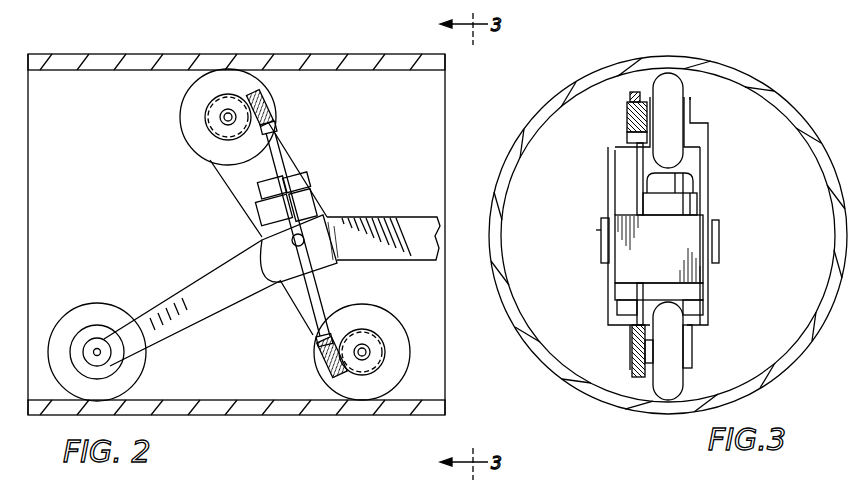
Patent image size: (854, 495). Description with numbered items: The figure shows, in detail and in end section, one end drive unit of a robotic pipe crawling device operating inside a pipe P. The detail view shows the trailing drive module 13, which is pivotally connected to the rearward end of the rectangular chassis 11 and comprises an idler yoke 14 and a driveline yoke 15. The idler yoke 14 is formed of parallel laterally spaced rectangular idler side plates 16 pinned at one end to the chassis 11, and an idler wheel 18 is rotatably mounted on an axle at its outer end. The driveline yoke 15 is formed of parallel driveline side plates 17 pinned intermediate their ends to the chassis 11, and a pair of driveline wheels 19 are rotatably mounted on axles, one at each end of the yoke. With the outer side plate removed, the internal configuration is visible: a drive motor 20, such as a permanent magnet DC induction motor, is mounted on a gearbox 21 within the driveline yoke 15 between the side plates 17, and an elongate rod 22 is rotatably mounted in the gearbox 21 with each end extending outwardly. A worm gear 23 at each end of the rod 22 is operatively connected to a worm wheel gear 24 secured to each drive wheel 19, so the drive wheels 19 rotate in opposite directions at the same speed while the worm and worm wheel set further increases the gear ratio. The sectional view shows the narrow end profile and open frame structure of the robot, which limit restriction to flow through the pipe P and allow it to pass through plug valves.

In FIG. 2, the pipe P is at (262, 54).
In FIG. 3, the pipe P is at (585, 73).
In FIG. 2, the rectangular chassis 11 is at (396, 228).
In FIG. 3, the rectangular chassis 11 is at (600, 231).
In FIG. 2, the trailing drive module 13 is at (365, 155).
In FIG. 3, the trailing drive module 13 is at (724, 153).
In FIG. 2, the idler yoke 14 is at (185, 291).
In FIG. 3, the driveline yoke 15 is at (710, 161).
In FIG. 2, the idler side plates 16 is at (178, 318).
In FIG. 3, the driveline side plates 17 is at (608, 188).
In FIG. 2, the idler wheel 18 is at (95, 312).
In FIG. 2, the driveline wheels 19 is at (182, 103).
In FIG. 3, the driveline wheels 19 is at (674, 88).
In FIG. 2, the drive motor 20 is at (270, 216).
In FIG. 3, the drive motor 20 is at (686, 202).
In FIG. 2, the gearbox 21 is at (330, 258).
In FIG. 3, the gearbox 21 is at (672, 258).
In FIG. 2, the elongate rod 22 is at (285, 146).
In FIG. 3, the elongate rod 22 is at (637, 163).
In FIG. 2, the worm gear 23 is at (270, 104).
In FIG. 3, the worm gear 23 is at (627, 113).
In FIG. 2, the worm wheel gear 24 is at (207, 132).
In FIG. 3, the worm wheel gear 24 is at (636, 95).